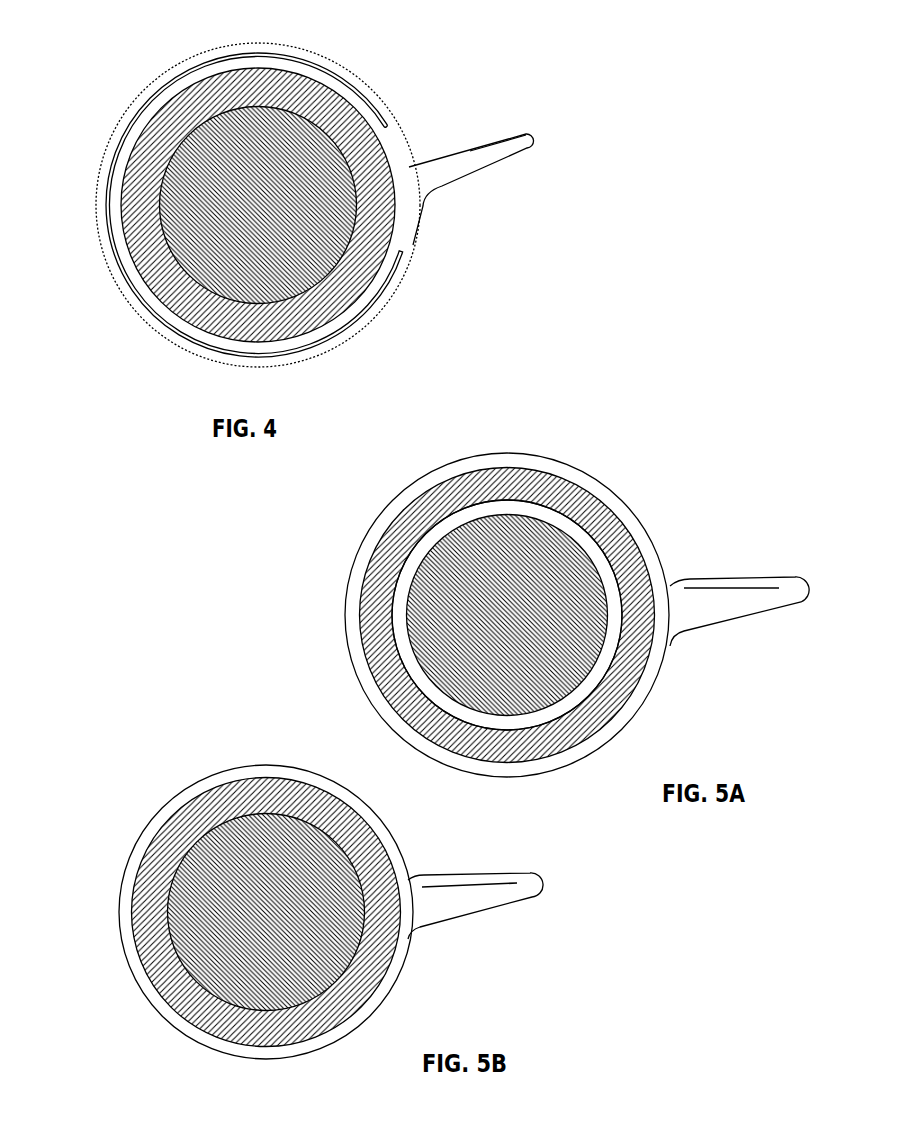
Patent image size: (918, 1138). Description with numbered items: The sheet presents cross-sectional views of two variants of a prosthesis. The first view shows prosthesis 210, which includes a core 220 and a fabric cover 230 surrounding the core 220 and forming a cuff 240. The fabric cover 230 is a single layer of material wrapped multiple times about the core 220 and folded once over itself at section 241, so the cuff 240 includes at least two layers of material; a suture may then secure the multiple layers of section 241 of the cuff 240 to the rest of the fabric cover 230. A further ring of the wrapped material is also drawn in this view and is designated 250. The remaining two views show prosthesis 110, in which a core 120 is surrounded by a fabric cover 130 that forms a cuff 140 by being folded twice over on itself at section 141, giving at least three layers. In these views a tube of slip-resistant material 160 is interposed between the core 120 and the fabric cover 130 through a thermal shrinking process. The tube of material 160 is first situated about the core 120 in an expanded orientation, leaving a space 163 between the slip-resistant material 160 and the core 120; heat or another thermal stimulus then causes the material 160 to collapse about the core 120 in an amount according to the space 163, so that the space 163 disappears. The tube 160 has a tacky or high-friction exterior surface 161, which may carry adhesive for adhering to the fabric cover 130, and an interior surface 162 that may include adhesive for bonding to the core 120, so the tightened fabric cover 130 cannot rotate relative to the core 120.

In FIG. 4, the prosthesis 210 is at (134, 50).
In FIG. 4, the core 220 is at (178, 168).
In FIG. 4, the fabric cover 230 is at (292, 366).
In FIG. 4, the cuff 240 is at (493, 163).
In FIG. 4, the section 241 is at (492, 141).
In FIG. 4, the annular body 250 is at (303, 88).
In FIG. 5A, the prosthesis 110 is at (470, 428).
In FIG. 5B, the prosthesis 110 is at (163, 760).
In FIG. 5A, the core 120 is at (433, 567).
In FIG. 5B, the core 120 is at (183, 872).
In FIG. 5A, the fabric cover 130 is at (347, 612).
In FIG. 5B, the fabric cover 130 is at (342, 1035).
In FIG. 5A, the cuff 140 is at (757, 620).
In FIG. 5B, the cuff 140 is at (508, 908).
In FIG. 5A, the section 141 is at (733, 578).
In FIG. 5B, the section 141 is at (467, 873).
In FIG. 5A, the slip-resistant material 160 is at (443, 737).
In FIG. 5B, the slip-resistant material 160 is at (203, 1025).
In FIG. 5A, the exterior surface 161 is at (445, 483).
In FIG. 5B, the exterior surface 161 is at (130, 889).
In FIG. 5A, the interior surface 162 is at (557, 505).
In FIG. 5B, the interior surface 162 is at (300, 817).
In FIG. 5A, the space 163 is at (617, 642).